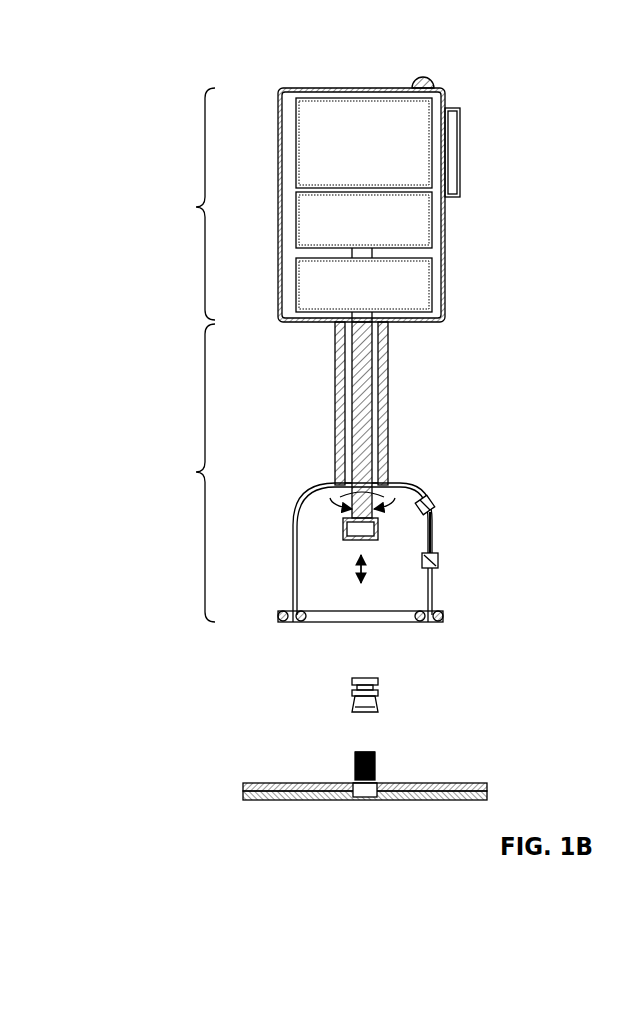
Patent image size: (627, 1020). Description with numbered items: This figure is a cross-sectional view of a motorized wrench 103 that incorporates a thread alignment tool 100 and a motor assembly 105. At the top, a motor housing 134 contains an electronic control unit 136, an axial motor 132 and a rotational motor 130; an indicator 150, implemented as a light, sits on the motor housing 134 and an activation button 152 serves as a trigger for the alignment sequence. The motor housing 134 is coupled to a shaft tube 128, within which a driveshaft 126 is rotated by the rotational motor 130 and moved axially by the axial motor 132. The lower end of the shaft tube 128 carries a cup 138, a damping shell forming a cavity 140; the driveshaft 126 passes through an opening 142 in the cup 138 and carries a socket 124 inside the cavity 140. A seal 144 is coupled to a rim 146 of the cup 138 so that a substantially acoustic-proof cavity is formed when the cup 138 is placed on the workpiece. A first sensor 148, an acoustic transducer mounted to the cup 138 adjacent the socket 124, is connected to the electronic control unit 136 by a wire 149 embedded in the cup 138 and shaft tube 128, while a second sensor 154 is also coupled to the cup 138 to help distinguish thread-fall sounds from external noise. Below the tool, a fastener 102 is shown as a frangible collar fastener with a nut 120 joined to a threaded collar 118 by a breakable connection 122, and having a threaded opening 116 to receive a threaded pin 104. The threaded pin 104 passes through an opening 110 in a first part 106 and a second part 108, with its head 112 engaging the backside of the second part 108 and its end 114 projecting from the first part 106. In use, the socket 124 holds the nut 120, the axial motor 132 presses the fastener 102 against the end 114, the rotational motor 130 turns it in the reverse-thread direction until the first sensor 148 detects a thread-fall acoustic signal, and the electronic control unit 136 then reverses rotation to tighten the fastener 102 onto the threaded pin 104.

The thread alignment tool 100 is at (183, 473).
The fastener 102 is at (353, 698).
The motorized wrench 103 is at (222, 63).
The threaded pin 104 is at (355, 747).
The motor assembly 105 is at (183, 204).
The first part 106 is at (245, 786).
The second part 108 is at (245, 795).
The opening 110 is at (352, 777).
The head 112 is at (362, 798).
The end 114 is at (364, 751).
The threaded opening 116 is at (367, 719).
The threaded collar 118 is at (357, 710).
The nut 120 is at (363, 678).
The breakable connection 122 is at (357, 692).
The socket 124 is at (378, 530).
The driveshaft 126 is at (365, 428).
The shaft tube 128 is at (386, 384).
The rotational motor 130 is at (432, 287).
The axial motor 132 is at (432, 222).
The motor housing 134 is at (281, 232).
The electronic control unit 136 is at (432, 152).
The cup 138 is at (292, 572).
The cavity 140 is at (340, 612).
The opening 142 is at (340, 481).
The seal 144 is at (440, 620).
The rim 146 is at (430, 623).
The first sensor 148 is at (438, 566).
The wire 149 is at (433, 530).
The indicator 150 is at (430, 79).
The activation button 152 is at (455, 118).
The second sensor 154 is at (437, 500).